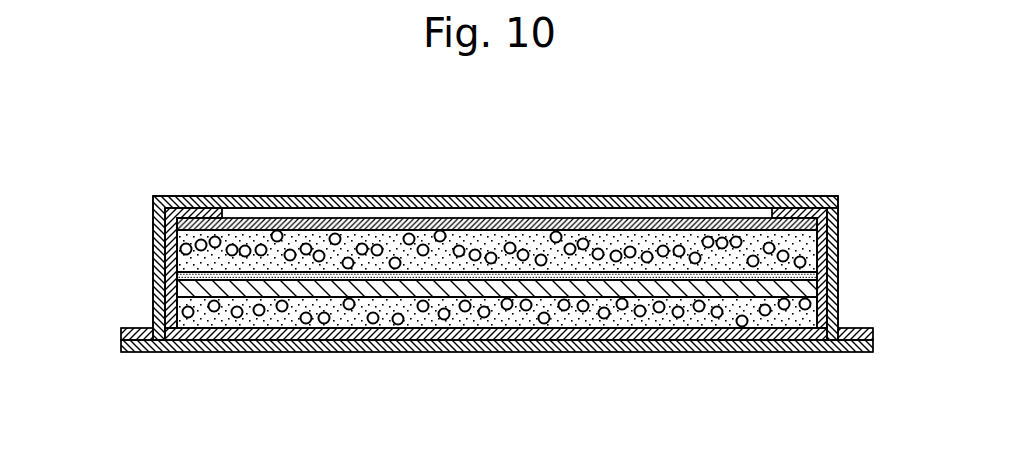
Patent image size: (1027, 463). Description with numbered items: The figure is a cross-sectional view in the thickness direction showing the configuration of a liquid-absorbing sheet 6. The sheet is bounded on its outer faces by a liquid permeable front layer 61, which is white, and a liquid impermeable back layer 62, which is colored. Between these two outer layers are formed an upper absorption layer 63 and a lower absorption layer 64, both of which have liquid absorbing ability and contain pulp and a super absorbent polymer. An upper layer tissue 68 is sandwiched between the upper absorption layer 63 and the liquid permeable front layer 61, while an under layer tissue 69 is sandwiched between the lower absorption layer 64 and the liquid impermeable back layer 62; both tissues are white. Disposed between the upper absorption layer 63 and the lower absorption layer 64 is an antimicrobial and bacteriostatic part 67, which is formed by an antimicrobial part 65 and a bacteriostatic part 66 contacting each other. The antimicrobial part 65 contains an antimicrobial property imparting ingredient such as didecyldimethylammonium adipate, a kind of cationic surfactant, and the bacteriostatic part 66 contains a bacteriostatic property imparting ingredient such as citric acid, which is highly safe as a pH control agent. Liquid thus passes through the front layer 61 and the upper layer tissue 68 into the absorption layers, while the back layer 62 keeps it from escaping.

The liquid-absorbing sheet 6 is at (748, 164).
The liquid permeable front layer 61 is at (188, 197).
The liquid impermeable back layer 62 is at (663, 352).
The upper absorption layer 63 is at (837, 255).
The lower absorption layer 64 is at (800, 302).
The antimicrobial part 65 is at (153, 310).
The bacteriostatic part 66 is at (153, 273).
The antimicrobial and bacteriostatic part 67 is at (426, 280).
The upper layer tissue 68 is at (255, 220).
The under layer tissue 69 is at (565, 352).